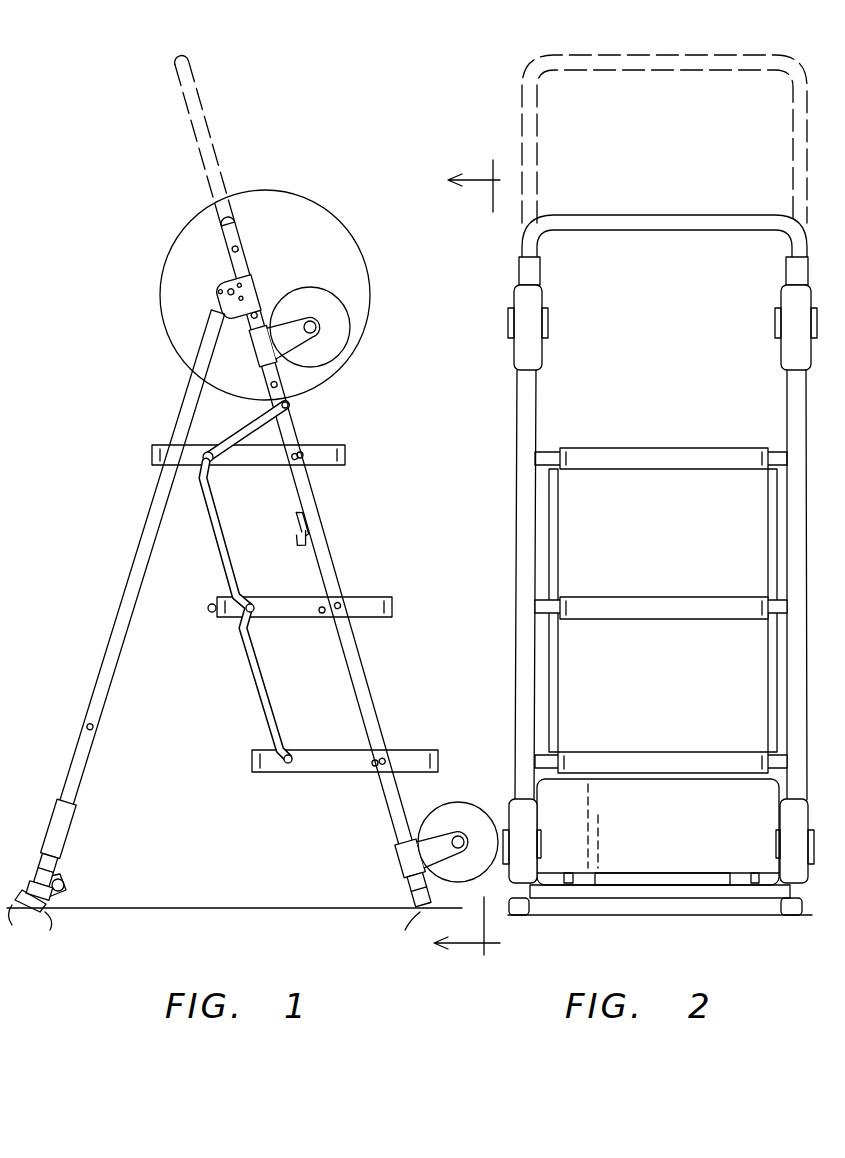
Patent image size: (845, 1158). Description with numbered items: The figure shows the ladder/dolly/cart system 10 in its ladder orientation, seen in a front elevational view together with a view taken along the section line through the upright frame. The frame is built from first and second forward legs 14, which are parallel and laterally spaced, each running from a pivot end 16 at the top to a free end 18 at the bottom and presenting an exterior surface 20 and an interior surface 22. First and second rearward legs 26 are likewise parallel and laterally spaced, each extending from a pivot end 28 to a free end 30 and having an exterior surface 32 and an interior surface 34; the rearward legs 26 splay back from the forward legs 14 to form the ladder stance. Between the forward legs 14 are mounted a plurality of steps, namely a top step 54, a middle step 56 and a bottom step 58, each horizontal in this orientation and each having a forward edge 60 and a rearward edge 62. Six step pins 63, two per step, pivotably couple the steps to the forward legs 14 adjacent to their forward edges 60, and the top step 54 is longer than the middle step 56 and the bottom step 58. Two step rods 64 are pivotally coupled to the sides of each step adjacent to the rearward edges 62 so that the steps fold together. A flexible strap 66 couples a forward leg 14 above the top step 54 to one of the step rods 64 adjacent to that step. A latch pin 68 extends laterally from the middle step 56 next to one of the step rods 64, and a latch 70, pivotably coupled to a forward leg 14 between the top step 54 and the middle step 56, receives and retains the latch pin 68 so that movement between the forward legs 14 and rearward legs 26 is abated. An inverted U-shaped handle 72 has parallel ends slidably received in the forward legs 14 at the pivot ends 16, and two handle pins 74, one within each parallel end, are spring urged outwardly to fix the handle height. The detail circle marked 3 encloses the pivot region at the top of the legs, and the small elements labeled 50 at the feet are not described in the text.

In FIG. 1, the ladder/dolly/cart system 10 is at (152, 188).
In FIG. 1, the detail view indicator 3 is at (318, 190).
In FIG. 1, the forward legs 14 is at (277, 575).
In FIG. 2, the forward legs 14 is at (800, 400).
In FIG. 1, the pivot ends 16 is at (250, 285).
In FIG. 2, the pivot ends 16 is at (790, 262).
In FIG. 1, the free ends 18 is at (408, 890).
In FIG. 2, the free ends 18 is at (530, 897).
In FIG. 1, the exterior surfaces 20 is at (322, 503).
In FIG. 1, the interior surfaces 22 is at (300, 506).
In FIG. 1, the rearward legs 26 is at (132, 592).
In FIG. 1, the pivot ends 28 is at (210, 318).
In FIG. 1, the free ends 30 is at (40, 880).
In FIG. 1, the exterior surfaces 32 is at (90, 700).
In FIG. 1, the interior surfaces 34 is at (110, 706).
In FIG. 1, the wheel 50 is at (425, 902).
In FIG. 2, the wheel 50 is at (790, 907).
In FIG. 1, the top step 54 is at (345, 450).
In FIG. 2, the top step 54 is at (663, 448).
In FIG. 1, the middle step 56 is at (385, 600).
In FIG. 2, the middle step 56 is at (660, 597).
In FIG. 1, the bottom step 58 is at (418, 752).
In FIG. 2, the bottom step 58 is at (662, 752).
In FIG. 1, the forward edge 60 is at (395, 612).
In FIG. 1, the rearward edge 62 is at (212, 610).
In FIG. 1, the step pins 63 is at (300, 445).
In FIG. 1, the step rods 64 is at (200, 522).
In FIG. 2, the step rods 64 is at (560, 520).
In FIG. 1, the flexible strap 66 is at (235, 425).
In FIG. 1, the latch pin 68 is at (165, 537).
In FIG. 1, the latch 70 is at (325, 548).
In FIG. 1, the inverted U-shaped handle 72 is at (222, 236).
In FIG. 2, the inverted U-shaped handle 72 is at (683, 75).
In FIG. 2, the handle pins 74 is at (515, 375).